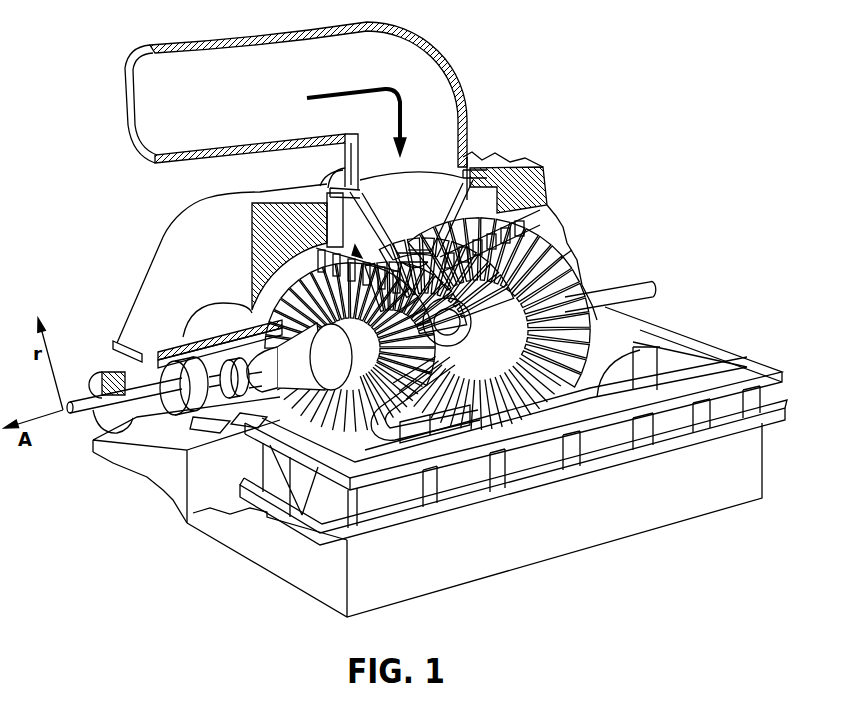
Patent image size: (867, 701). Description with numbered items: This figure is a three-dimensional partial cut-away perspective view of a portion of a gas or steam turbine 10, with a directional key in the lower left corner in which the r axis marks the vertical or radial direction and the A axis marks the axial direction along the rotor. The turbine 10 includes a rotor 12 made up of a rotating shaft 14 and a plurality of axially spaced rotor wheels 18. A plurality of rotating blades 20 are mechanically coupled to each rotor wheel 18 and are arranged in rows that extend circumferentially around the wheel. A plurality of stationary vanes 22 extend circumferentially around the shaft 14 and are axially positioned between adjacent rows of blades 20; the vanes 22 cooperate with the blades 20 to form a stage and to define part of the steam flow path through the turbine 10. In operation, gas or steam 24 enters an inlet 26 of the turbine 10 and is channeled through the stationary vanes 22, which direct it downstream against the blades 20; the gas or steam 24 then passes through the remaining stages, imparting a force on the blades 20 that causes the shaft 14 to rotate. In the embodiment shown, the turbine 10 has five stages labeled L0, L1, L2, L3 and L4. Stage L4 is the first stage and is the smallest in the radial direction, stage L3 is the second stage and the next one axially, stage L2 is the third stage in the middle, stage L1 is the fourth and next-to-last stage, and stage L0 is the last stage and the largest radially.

The turbine 10 is at (562, 75).
The rotor 12 is at (581, 248).
The rotating shaft 14 is at (72, 408).
The rotor wheel 18 is at (322, 186).
The rotating blade 20 is at (561, 258).
The stationary vane 22 is at (585, 376).
The gas or steam 24 is at (352, 88).
The inlet 26 is at (418, 250).
The stage L0 is at (567, 282).
The stage L1 is at (548, 300).
The stage L2 is at (505, 300).
The stage L3 is at (478, 300).
The stage L4 is at (455, 300).